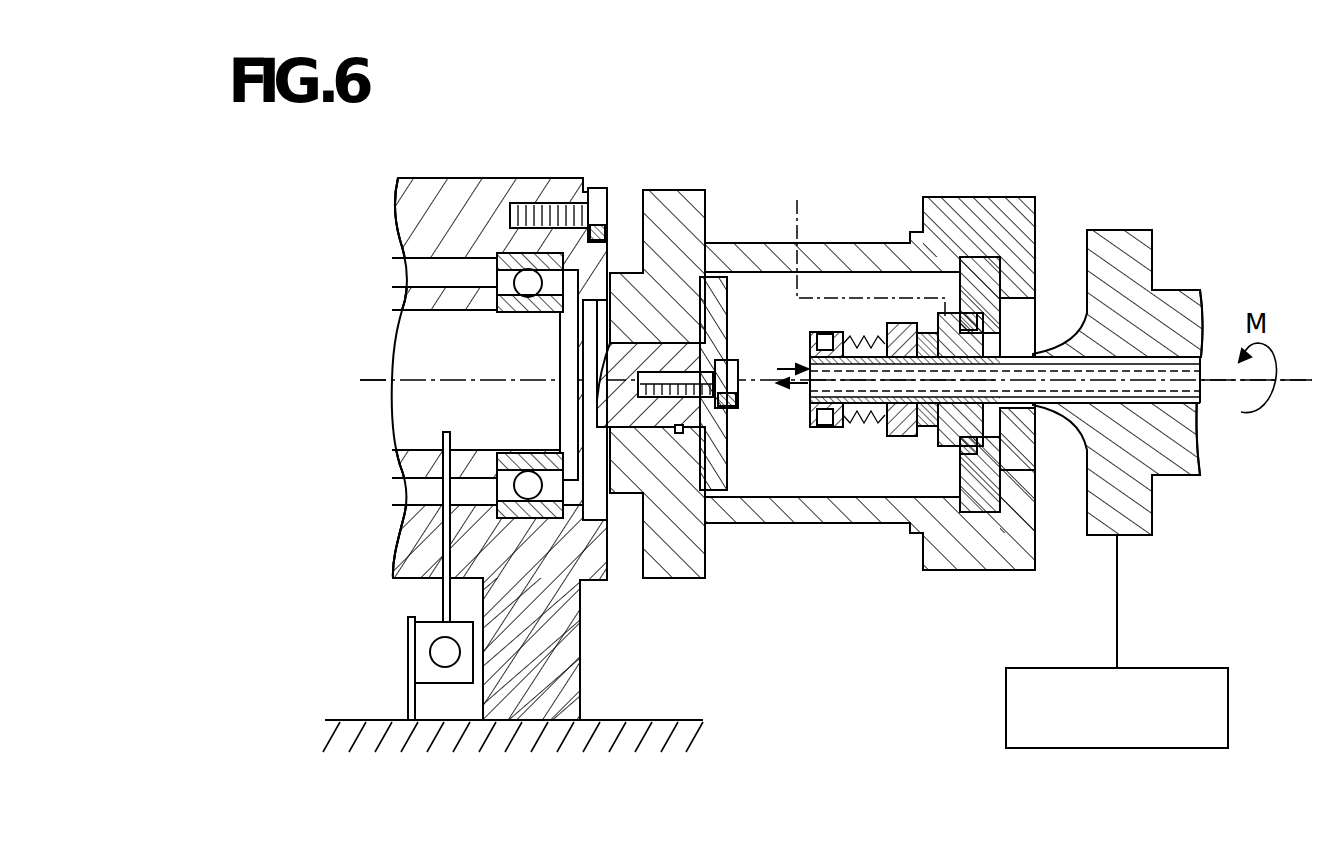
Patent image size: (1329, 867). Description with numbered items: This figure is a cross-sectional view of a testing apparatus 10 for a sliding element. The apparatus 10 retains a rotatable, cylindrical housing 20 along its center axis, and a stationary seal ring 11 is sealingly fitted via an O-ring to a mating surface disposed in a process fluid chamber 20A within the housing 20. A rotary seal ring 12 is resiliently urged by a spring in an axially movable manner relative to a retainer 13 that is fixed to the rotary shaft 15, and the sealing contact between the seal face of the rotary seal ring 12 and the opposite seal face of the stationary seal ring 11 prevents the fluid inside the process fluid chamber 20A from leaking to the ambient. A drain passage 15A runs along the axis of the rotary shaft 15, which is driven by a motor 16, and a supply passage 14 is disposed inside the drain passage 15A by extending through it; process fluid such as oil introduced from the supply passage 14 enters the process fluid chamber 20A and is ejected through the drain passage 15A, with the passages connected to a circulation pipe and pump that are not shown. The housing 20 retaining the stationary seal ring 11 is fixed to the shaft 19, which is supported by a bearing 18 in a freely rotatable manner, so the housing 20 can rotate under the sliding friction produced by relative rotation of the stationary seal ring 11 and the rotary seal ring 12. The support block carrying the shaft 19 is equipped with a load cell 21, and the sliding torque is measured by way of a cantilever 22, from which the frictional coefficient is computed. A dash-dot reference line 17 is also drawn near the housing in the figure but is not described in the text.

The testing apparatus 10 is at (870, 371).
The stationary seal ring 11 is at (957, 275).
The rotary seal ring 12 is at (928, 335).
The retainer 13 is at (895, 327).
The supply passage 14 is at (1180, 403).
The rotary shaft 15 is at (1121, 361).
The drain passage 15A is at (1180, 367).
The motor 16 is at (1231, 698).
The gap 17 is at (797, 200).
The bearing 18 is at (497, 285).
The shaft 19 is at (418, 364).
The housing 20 is at (808, 520).
The process fluid chamber 20A is at (872, 482).
The load cell 21 is at (432, 650).
The cantilever 22 is at (443, 595).